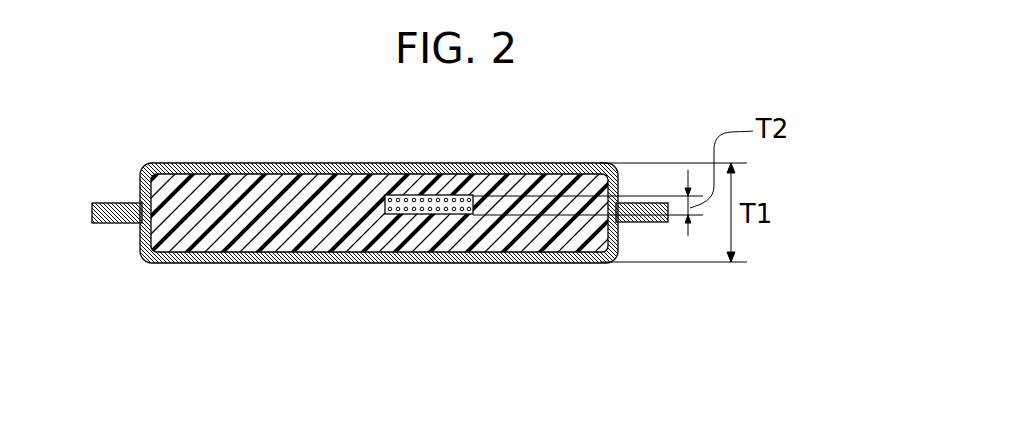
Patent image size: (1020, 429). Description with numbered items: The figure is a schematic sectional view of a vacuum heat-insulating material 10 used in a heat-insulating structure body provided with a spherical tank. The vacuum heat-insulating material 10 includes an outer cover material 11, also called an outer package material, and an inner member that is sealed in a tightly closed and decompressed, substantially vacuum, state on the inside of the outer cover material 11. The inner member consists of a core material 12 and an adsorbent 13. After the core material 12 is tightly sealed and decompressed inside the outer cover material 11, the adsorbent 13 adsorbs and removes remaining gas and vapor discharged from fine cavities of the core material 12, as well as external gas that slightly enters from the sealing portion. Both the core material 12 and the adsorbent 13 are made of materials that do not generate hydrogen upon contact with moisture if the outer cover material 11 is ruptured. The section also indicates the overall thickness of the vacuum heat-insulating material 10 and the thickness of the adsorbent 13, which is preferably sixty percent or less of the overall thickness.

The vacuum heat-insulating material 10 is at (232, 146).
The outer cover material 11 is at (352, 262).
The core material 12 is at (345, 163).
The adsorbent 13 is at (447, 195).